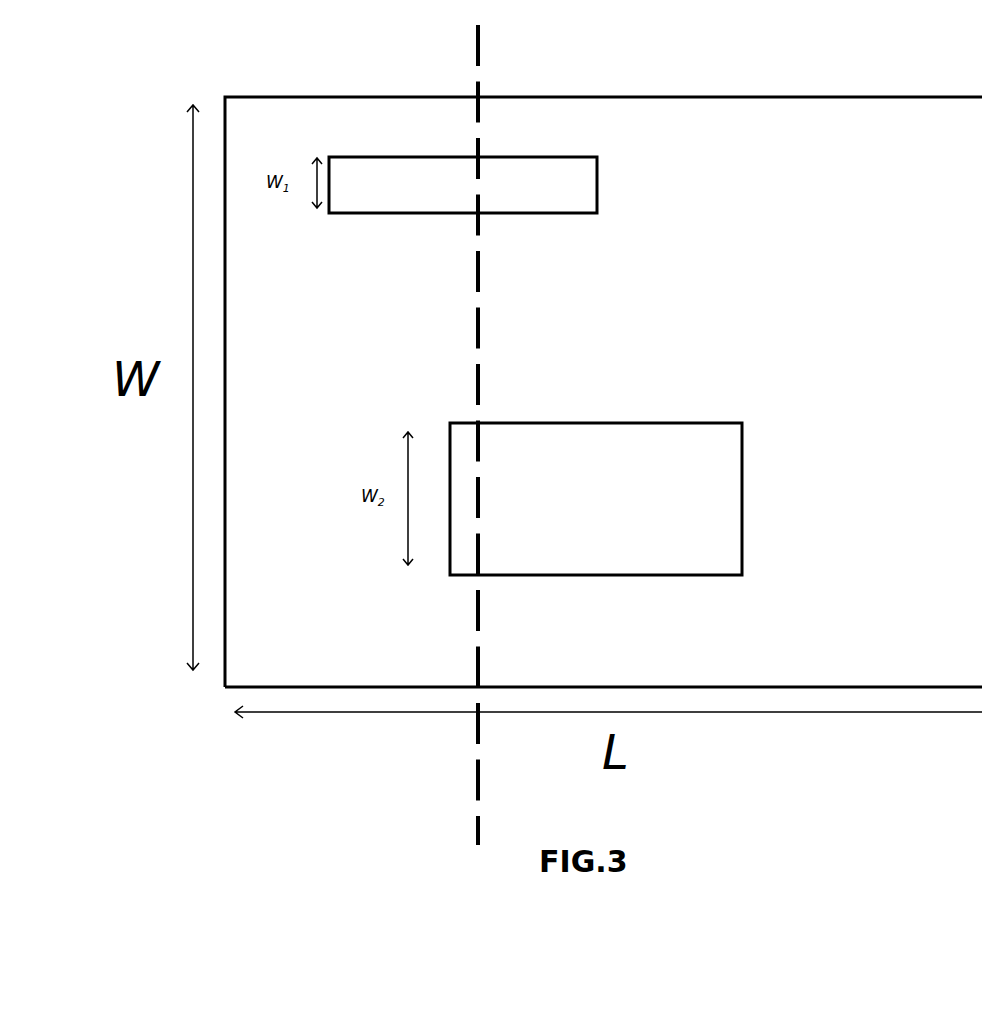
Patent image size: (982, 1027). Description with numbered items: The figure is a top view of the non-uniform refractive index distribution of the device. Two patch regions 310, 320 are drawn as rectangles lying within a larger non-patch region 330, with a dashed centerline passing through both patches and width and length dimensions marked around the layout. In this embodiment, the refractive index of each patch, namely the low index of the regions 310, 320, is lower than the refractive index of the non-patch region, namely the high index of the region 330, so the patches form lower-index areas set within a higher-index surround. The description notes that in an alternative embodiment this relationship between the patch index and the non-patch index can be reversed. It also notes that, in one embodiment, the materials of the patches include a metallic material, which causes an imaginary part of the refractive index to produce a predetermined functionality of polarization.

The region 310 is at (463, 185).
The region 320 is at (596, 499).
The region 330 is at (603, 392).